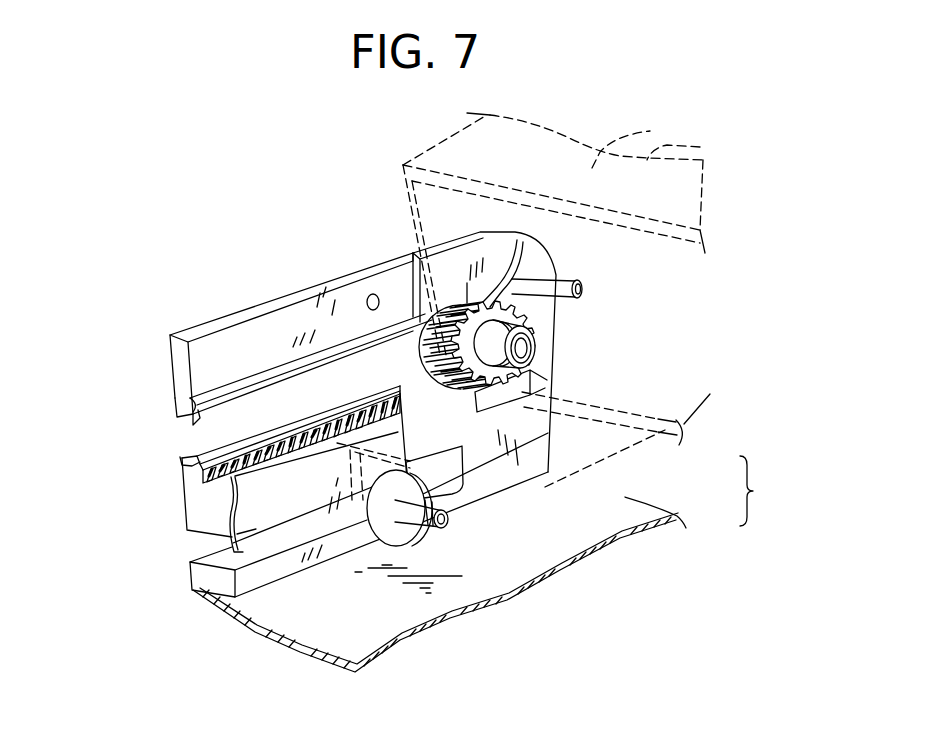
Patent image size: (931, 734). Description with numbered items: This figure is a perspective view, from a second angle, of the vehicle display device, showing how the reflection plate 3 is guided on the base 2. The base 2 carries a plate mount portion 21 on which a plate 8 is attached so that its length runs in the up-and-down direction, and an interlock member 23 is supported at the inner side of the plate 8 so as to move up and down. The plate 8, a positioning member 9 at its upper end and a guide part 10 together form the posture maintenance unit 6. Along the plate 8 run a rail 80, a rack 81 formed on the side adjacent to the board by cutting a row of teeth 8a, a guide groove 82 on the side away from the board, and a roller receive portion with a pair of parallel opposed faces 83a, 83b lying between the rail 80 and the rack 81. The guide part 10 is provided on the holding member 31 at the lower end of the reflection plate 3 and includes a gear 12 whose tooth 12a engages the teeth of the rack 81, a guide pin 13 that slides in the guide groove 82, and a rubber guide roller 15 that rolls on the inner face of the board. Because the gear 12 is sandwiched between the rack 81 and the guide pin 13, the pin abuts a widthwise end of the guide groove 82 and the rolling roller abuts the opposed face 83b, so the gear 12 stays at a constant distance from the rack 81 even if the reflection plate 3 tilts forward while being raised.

The base 2 is at (517, 596).
The plate mount portion 21 is at (487, 584).
The reflection plate 3 is at (700, 147).
The holding member 31 is at (650, 131).
The posture maintenance unit 6 is at (745, 491).
The plate 8 is at (170, 372).
The rack teeth 8a is at (288, 458).
The rail 80 is at (210, 442).
The rack 81 is at (260, 472).
The guide groove 82 is at (190, 401).
The opposed face 83a is at (183, 453).
The opposed face 83b is at (198, 418).
The positioning member 9 is at (520, 381).
The guide part 10 is at (537, 348).
The gear 12 is at (522, 326).
The tooth 12a is at (517, 240).
The guide pin 13 is at (578, 282).
The guide roller 15 is at (443, 535).
The interlock member 23 is at (232, 542).